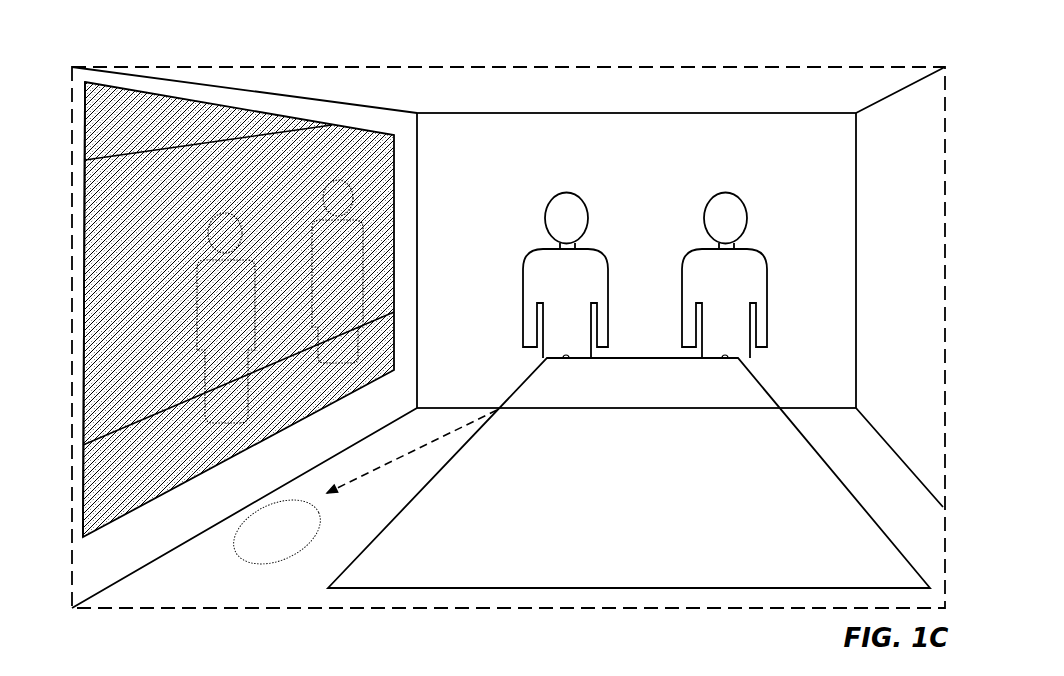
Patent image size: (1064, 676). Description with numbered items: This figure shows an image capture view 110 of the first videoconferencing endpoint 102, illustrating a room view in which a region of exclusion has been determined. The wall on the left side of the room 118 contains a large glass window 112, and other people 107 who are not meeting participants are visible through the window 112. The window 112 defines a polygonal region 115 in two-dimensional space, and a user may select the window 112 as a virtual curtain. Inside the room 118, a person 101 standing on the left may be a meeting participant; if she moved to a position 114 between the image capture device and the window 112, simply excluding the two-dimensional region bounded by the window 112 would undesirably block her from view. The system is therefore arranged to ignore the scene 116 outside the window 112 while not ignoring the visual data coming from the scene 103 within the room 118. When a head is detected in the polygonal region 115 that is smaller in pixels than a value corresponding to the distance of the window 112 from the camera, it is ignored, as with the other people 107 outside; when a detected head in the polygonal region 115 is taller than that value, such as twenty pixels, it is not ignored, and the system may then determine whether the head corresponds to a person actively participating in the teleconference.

The person 101 is at (568, 183).
The first videoconferencing endpoint 102 is at (855, 60).
The scene within the room 103 is at (591, 97).
The other people 107 is at (348, 172).
The image capture view 110 is at (157, 63).
The window 112 is at (248, 110).
The position 114 is at (360, 493).
The polygonal region 115 is at (85, 118).
The scene outside the window 116 is at (125, 226).
The room 118 is at (697, 82).